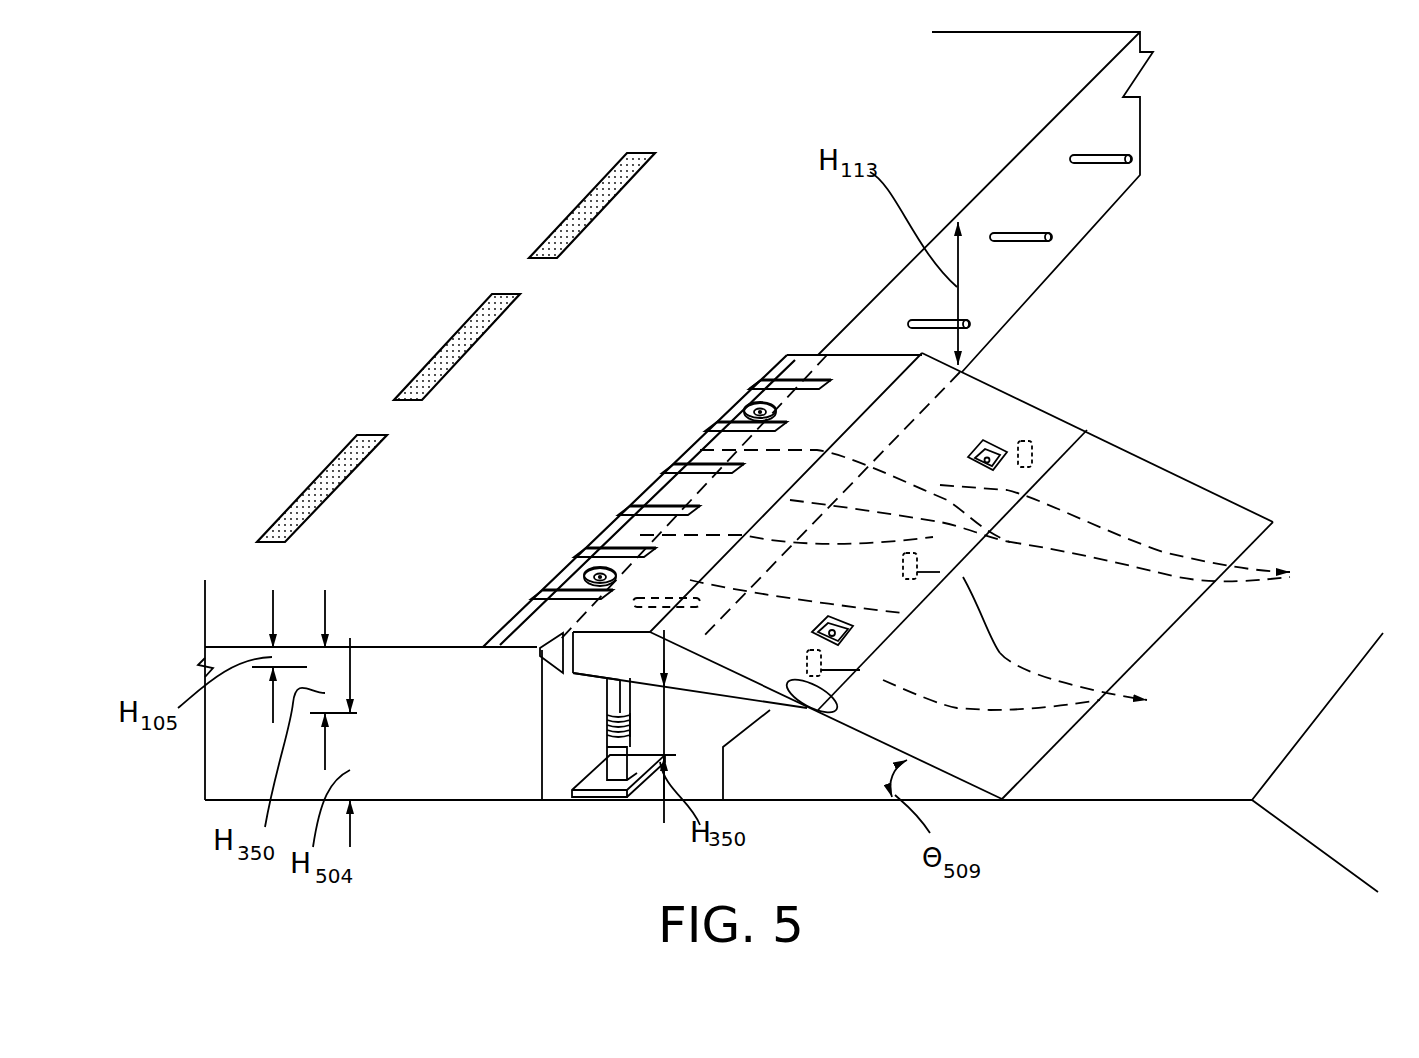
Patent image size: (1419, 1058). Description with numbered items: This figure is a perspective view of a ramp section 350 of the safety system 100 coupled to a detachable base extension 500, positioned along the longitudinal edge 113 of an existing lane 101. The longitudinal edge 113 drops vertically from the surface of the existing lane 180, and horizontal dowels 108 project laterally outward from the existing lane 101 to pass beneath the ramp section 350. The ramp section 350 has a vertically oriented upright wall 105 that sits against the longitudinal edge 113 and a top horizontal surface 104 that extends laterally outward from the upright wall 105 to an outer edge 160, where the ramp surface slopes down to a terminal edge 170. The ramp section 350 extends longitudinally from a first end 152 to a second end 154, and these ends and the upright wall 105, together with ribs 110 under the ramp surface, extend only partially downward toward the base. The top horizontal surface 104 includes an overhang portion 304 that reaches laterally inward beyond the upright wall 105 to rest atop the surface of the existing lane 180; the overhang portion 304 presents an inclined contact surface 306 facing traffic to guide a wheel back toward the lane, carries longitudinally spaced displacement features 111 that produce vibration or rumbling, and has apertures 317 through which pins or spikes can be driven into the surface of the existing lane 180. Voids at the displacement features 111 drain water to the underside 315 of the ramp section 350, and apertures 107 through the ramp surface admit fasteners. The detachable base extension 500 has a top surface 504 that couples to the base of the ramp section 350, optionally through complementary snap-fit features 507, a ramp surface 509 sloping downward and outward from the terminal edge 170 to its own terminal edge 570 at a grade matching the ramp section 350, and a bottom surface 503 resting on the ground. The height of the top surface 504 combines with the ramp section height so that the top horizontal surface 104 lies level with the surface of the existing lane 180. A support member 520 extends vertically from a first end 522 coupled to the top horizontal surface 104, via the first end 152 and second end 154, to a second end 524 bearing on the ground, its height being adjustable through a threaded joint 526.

The safety system 100 is at (1170, 328).
The existing lane 101 is at (473, 320).
The top horizontal surface 104 is at (878, 367).
The upright wall 105 is at (537, 650).
The aperture 107 is at (1003, 450).
The horizontal dowel 108 is at (1023, 247).
The rib 110 is at (1030, 521).
The displacement feature 111 is at (740, 425).
The longitudinal edge 113 is at (1077, 200).
The first end 152 is at (542, 660).
The second end 154 is at (1037, 395).
The outer edge 160 is at (870, 400).
The terminal edge 170 is at (1037, 480).
The surface of the existing lane 180 is at (318, 541).
The overhang portion 304 is at (807, 363).
The inclined contact surface 306 is at (566, 612).
The underside 315 is at (665, 835).
The aperture 317 is at (767, 407).
The ramp section 350 is at (1067, 420).
The detachable base extension 500 is at (1013, 745).
The bottom surface 503 is at (968, 802).
The top surface 504 is at (787, 723).
The snap-fit feature 507 is at (1041, 692).
The ramp surface 509 is at (1100, 647).
The support member 520 is at (617, 762).
The first end 522 is at (593, 687).
The second end 524 is at (602, 802).
The threaded joint 526 is at (607, 728).
The terminal edge 570 is at (1173, 627).